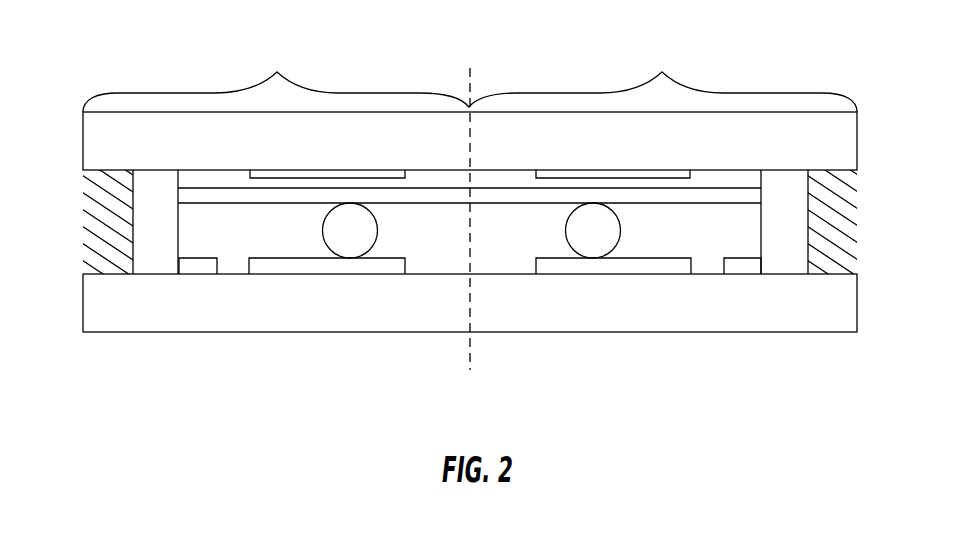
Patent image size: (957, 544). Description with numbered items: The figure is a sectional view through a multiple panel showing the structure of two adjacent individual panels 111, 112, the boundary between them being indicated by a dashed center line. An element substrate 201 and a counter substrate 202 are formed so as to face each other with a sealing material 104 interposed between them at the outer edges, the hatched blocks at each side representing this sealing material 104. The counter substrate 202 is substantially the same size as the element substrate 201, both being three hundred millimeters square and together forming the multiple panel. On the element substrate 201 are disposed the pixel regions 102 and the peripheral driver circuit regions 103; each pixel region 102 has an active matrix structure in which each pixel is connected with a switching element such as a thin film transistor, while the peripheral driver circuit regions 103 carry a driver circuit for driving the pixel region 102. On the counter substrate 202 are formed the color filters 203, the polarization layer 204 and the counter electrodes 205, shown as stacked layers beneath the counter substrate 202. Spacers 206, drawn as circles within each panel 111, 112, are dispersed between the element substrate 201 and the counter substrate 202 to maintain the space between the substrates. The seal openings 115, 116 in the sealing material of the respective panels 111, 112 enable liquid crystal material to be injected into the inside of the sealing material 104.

The element substrate 201 is at (470, 318).
The counter substrate 202 is at (500, 132).
The color filters 203 is at (476, 157).
The polarization layer 204 is at (503, 162).
The counter electrodes 205 is at (476, 215).
The spacers 206 is at (583, 237).
The pixel region 102 is at (469, 288).
The peripheral driver circuit regions 103 is at (437, 288).
The sealing material 104 is at (477, 222).
The individual panel 111 is at (278, 49).
The individual panel 112 is at (662, 49).
The seal opening 115 is at (397, 282).
The seal opening 116 is at (542, 282).